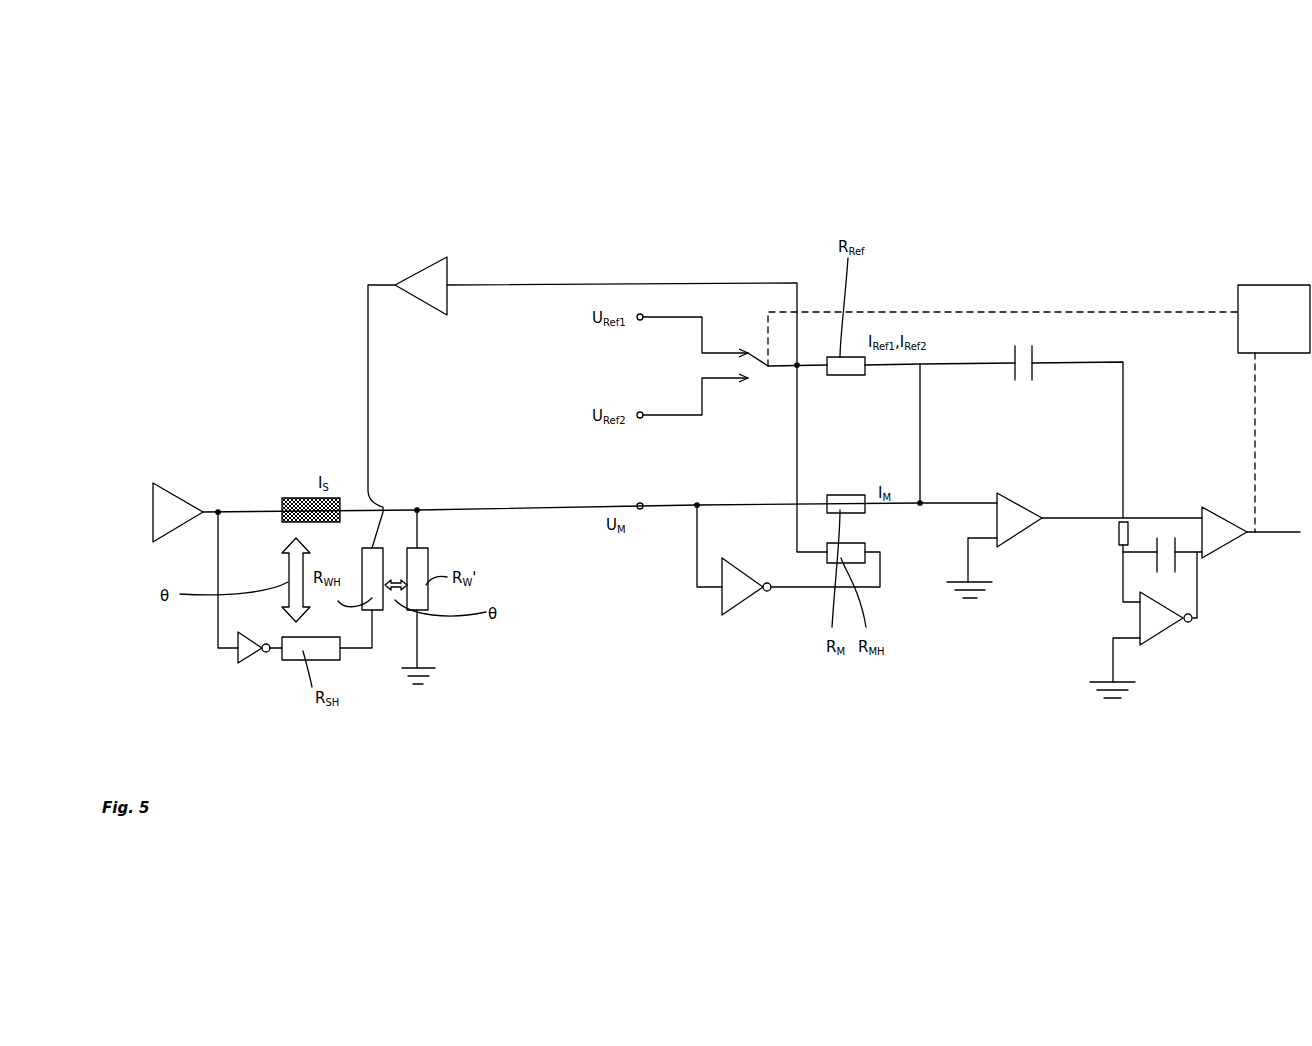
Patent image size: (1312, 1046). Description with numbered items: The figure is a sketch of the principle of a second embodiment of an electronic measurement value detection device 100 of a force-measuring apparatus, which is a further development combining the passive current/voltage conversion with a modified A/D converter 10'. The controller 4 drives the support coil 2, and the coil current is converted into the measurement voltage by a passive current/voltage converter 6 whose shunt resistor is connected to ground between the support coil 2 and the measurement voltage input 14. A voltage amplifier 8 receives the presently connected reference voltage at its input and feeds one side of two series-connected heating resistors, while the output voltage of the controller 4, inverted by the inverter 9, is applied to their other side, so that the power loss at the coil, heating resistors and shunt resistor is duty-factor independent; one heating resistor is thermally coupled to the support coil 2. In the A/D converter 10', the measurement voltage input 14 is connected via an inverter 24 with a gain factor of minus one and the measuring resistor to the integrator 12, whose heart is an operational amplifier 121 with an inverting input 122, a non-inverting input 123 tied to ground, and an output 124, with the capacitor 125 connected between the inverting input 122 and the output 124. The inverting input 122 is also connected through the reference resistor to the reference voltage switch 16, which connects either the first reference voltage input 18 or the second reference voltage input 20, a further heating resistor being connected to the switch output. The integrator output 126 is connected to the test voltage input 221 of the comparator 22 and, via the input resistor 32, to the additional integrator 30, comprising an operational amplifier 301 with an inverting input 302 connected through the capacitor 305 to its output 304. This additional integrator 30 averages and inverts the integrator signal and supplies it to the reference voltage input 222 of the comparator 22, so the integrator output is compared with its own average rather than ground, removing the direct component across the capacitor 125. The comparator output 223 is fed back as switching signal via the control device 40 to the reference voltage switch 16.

The electronic measurement value detection device 100 is at (1032, 178).
The voltage amplifier 8 is at (420, 285).
The first reference voltage input 18 is at (640, 312).
The second reference voltage input 20 is at (643, 411).
The reference voltage switch 16 is at (772, 364).
The capacitor 125 is at (1012, 358).
The A/D converter 10' is at (1219, 259).
The control device 40 is at (1280, 305).
The integrator 12 is at (1098, 412).
The integrator output 126 is at (1119, 522).
The reference voltage input of the comparator 222 is at (1157, 518).
The test voltage input 221 is at (1198, 550).
The comparator 22 is at (1232, 518).
The comparator output 223 is at (1252, 533).
The controller 4 is at (155, 505).
The support coil 2 is at (296, 497).
The inverter 9 is at (242, 657).
The current/voltage converter 6 is at (452, 628).
The measurement voltage input 14 is at (645, 510).
The inverter 24 is at (740, 592).
The inverting input 122 is at (995, 504).
The non-inverting input 123 is at (997, 537).
The operational amplifier 121 is at (1012, 522).
The output 124 is at (1045, 520).
The input resistor 32 is at (1117, 530).
The capacitor 305 is at (1177, 567).
The additional integrator 30 is at (1223, 657).
The operational amplifier 301 is at (1160, 624).
The output 304 is at (1190, 624).
The inverting input 302 is at (1118, 643).